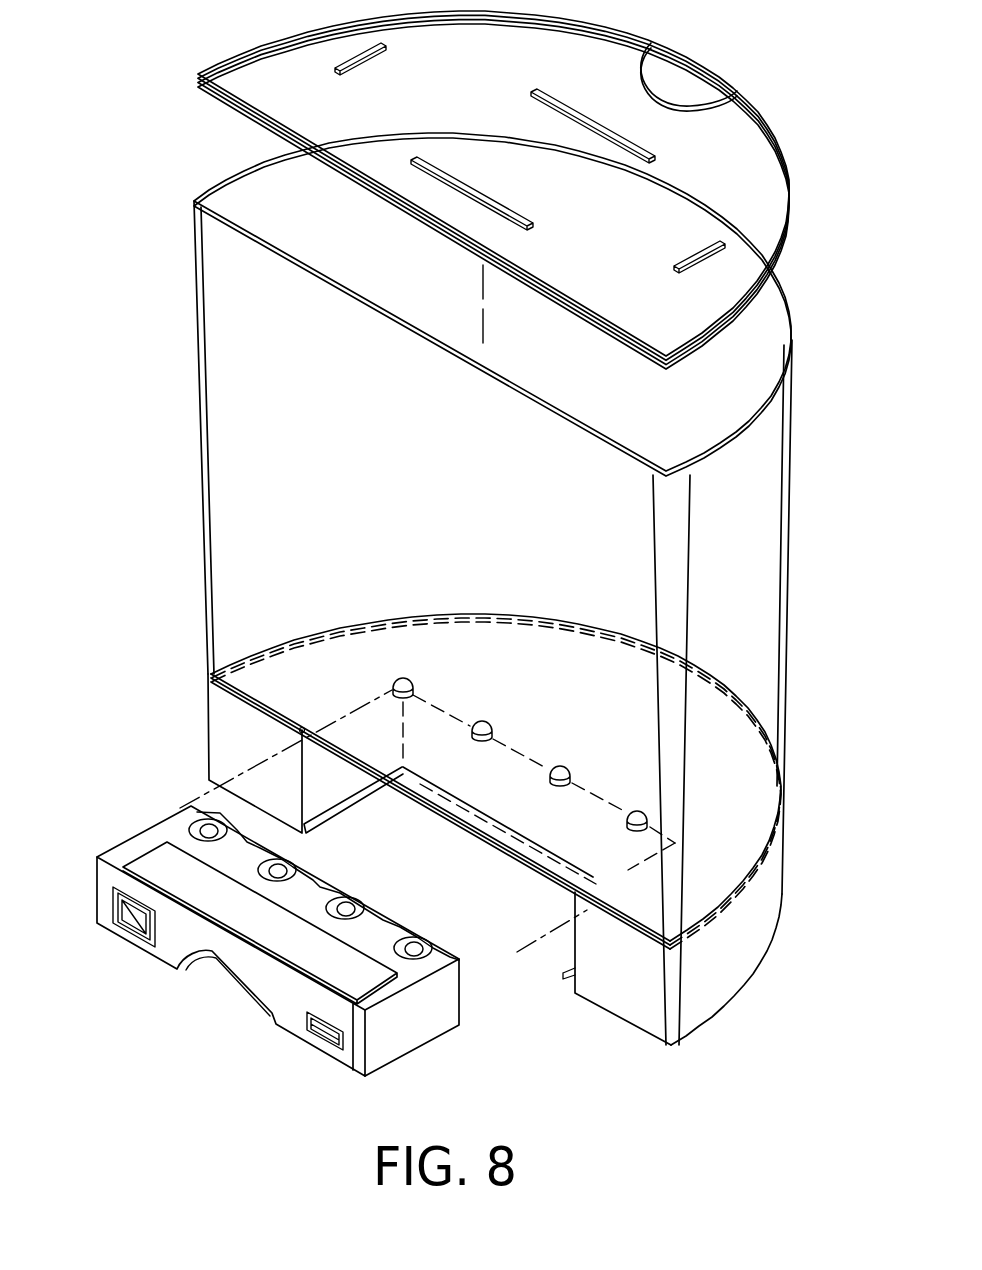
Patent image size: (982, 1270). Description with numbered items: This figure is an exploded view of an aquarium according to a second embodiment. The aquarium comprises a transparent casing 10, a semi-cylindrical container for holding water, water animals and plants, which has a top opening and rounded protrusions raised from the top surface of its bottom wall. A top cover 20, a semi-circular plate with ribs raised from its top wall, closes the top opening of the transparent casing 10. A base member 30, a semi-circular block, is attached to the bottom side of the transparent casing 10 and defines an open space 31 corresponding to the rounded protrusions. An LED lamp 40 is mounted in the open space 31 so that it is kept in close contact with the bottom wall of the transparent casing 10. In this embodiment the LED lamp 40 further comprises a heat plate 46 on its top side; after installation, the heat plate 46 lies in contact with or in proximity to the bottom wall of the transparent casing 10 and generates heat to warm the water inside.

The transparent casing 10 is at (196, 429).
The top cover 20 is at (762, 110).
The base member 30 is at (752, 966).
The open space 31 is at (545, 932).
The LED lamp 40 is at (247, 899).
The heat plate 46 is at (163, 858).